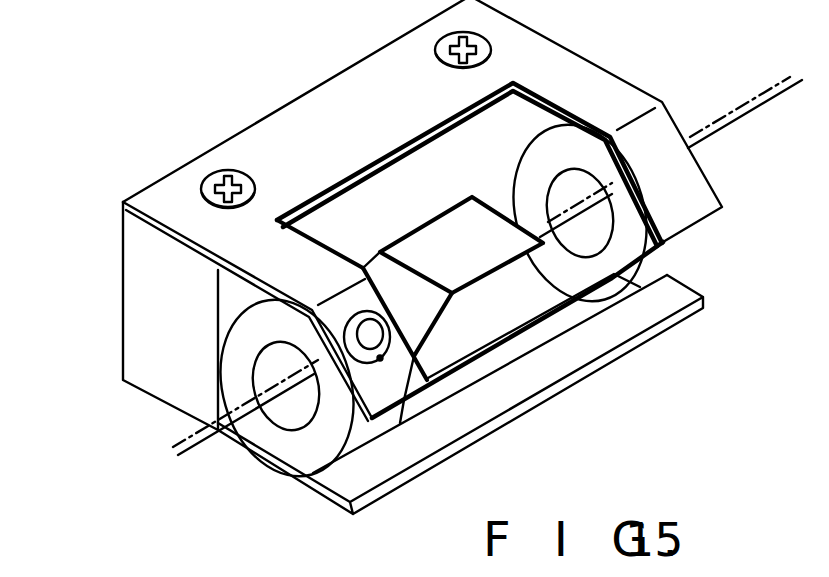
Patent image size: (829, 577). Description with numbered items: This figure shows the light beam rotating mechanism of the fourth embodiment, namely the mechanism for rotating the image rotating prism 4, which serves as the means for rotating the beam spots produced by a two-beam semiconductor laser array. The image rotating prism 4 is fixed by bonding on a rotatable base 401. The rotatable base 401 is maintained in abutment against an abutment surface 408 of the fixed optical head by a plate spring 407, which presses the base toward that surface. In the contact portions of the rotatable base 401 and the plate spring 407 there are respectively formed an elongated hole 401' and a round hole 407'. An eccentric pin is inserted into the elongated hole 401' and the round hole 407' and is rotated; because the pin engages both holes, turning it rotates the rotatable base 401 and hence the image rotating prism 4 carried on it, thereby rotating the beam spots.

The image rotating prism 4 is at (466, 214).
The rotatable base 401 is at (637, 213).
The elongated hole 401' is at (295, 372).
The plate spring 407 is at (457, 210).
The round hole 407' is at (490, 357).
The abutment surface 408 is at (137, 302).